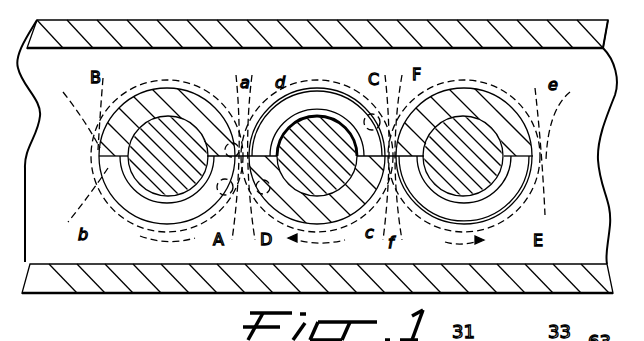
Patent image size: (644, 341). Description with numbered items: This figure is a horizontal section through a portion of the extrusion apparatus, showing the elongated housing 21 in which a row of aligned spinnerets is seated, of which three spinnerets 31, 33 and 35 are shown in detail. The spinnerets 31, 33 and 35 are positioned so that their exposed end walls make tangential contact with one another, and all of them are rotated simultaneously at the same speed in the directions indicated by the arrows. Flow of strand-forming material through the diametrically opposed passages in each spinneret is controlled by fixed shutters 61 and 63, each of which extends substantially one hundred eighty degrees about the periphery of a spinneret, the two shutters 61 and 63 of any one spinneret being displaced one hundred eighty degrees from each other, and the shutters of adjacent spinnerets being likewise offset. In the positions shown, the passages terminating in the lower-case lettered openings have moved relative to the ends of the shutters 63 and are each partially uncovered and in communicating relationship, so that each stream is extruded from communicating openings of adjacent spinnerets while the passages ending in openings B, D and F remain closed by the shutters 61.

The elongated housing 21 is at (123, 297).
The spinneret 31 is at (172, 145).
The spinneret 33 is at (330, 97).
The spinneret 35 is at (481, 117).
The fixed shutter 61 is at (172, 88).
The fixed shutter 63 is at (311, 96).